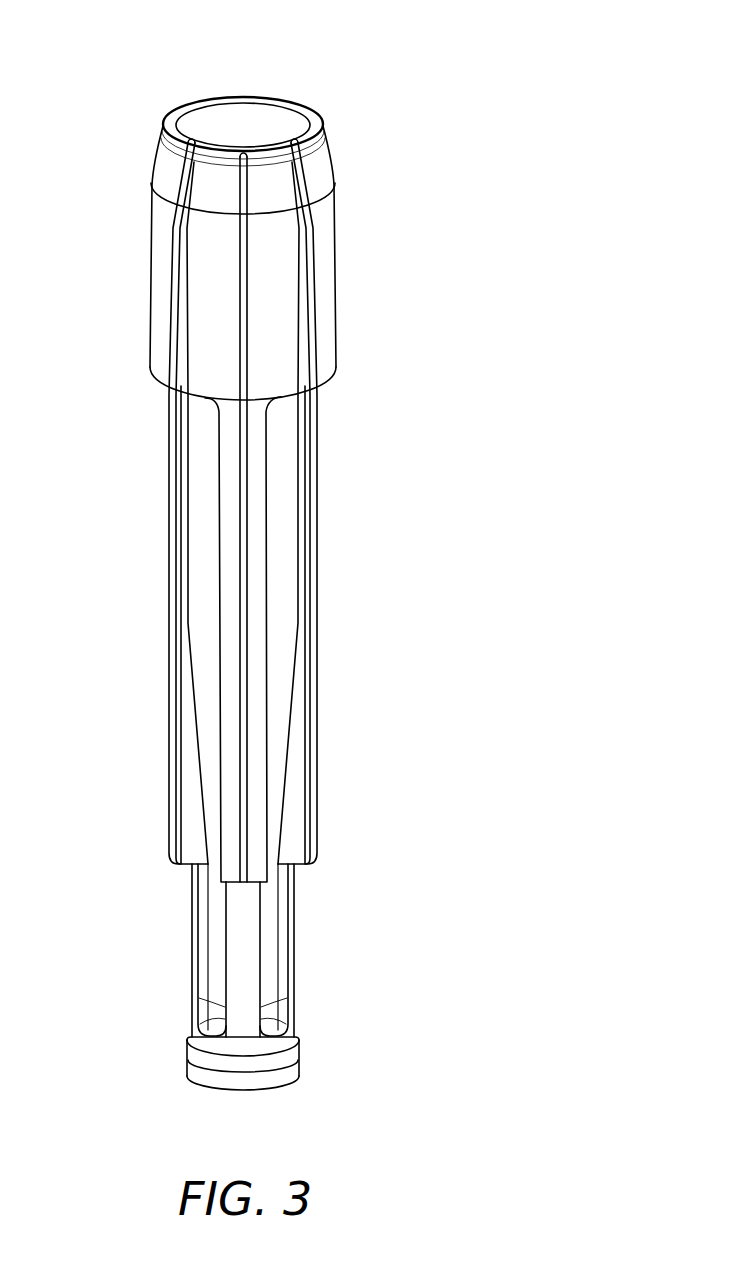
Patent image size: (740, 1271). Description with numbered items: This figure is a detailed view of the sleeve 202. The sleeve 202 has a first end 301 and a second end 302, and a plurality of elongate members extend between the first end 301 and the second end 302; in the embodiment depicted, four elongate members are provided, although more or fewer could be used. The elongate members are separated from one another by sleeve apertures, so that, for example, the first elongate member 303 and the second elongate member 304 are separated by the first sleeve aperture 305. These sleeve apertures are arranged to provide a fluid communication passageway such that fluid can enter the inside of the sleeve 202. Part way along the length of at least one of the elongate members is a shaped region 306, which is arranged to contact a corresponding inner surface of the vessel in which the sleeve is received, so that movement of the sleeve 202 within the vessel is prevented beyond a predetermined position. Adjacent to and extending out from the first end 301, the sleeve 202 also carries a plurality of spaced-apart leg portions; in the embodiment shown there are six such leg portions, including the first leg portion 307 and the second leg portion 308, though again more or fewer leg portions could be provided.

The sleeve 202 is at (246, 585).
The first end 301 is at (242, 118).
The second end 302 is at (245, 1090).
The first elongate member 303 is at (226, 968).
The second elongate member 304 is at (295, 921).
The first sleeve aperture 305 is at (272, 980).
The shaped region 306 is at (313, 862).
The first leg portion 307 is at (285, 313).
The second leg portion 308 is at (202, 313).